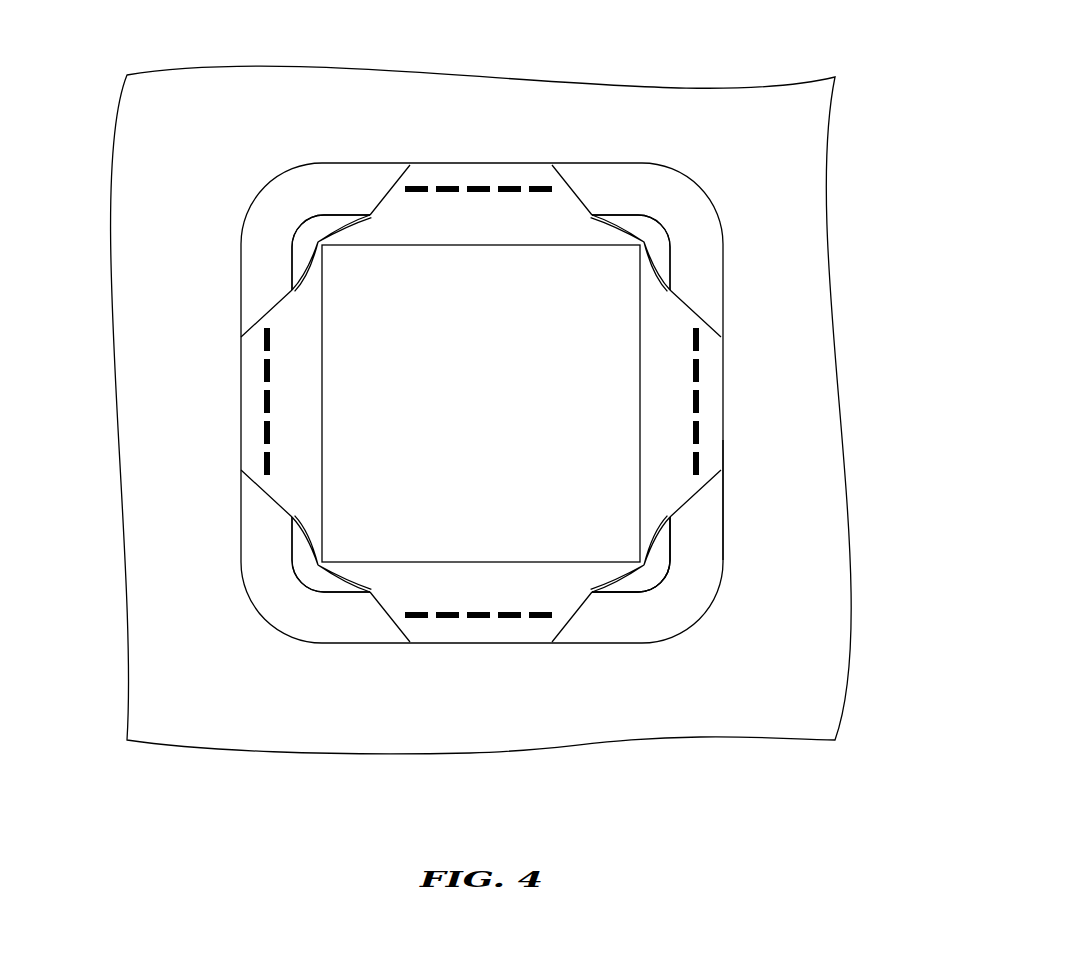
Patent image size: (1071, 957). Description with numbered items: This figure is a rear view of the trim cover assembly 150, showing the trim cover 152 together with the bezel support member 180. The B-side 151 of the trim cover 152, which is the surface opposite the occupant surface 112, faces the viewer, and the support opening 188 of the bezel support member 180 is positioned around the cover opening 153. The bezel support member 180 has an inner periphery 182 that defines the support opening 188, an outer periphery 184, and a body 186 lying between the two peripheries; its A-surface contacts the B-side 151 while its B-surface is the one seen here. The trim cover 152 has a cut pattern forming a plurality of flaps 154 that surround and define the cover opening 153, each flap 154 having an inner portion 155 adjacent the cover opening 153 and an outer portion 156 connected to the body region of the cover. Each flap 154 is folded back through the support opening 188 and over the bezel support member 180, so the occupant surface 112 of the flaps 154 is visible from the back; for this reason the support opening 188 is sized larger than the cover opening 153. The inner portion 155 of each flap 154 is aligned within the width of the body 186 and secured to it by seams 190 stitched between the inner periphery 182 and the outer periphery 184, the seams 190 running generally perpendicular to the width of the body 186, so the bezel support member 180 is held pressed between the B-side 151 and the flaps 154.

The trim cover assembly 150 is at (858, 169).
The B-side 151 is at (176, 226).
The trim cover 152 is at (776, 676).
The cover opening 153 is at (377, 391).
The flaps 154 is at (557, 220).
The inner portion 155 is at (458, 207).
The outer portion 156 is at (408, 242).
The bezel support member 180 is at (238, 188).
The inner periphery 182 is at (665, 575).
The outer periphery 184 is at (723, 538).
The body 186 is at (295, 200).
The support opening 188 is at (492, 414).
The seams 190 is at (537, 187).
The occupant surface 112 is at (512, 222).